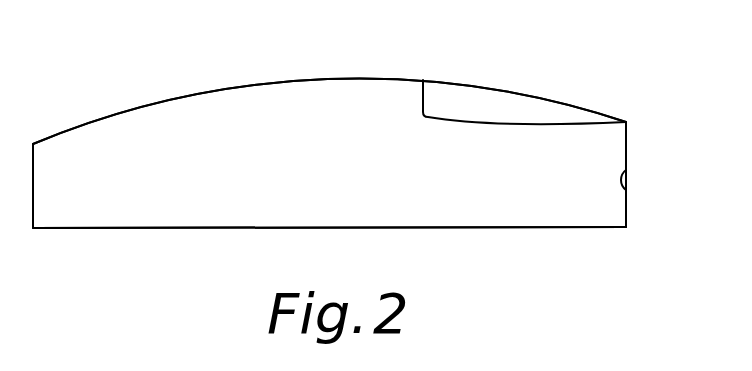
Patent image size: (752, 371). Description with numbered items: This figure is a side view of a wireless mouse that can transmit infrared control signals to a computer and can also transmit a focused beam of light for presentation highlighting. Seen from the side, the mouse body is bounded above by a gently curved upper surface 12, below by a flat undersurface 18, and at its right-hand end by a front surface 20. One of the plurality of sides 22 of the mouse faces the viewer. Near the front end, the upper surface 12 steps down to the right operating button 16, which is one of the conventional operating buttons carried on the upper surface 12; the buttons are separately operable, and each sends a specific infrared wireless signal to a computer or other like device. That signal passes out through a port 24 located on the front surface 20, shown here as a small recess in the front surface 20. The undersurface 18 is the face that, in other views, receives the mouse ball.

The upper surface 12 is at (322, 78).
The sides 22 is at (200, 138).
The operating button 16 is at (508, 100).
The front surface 20 is at (628, 145).
The port 24 is at (628, 182).
The undersurface 18 is at (478, 228).